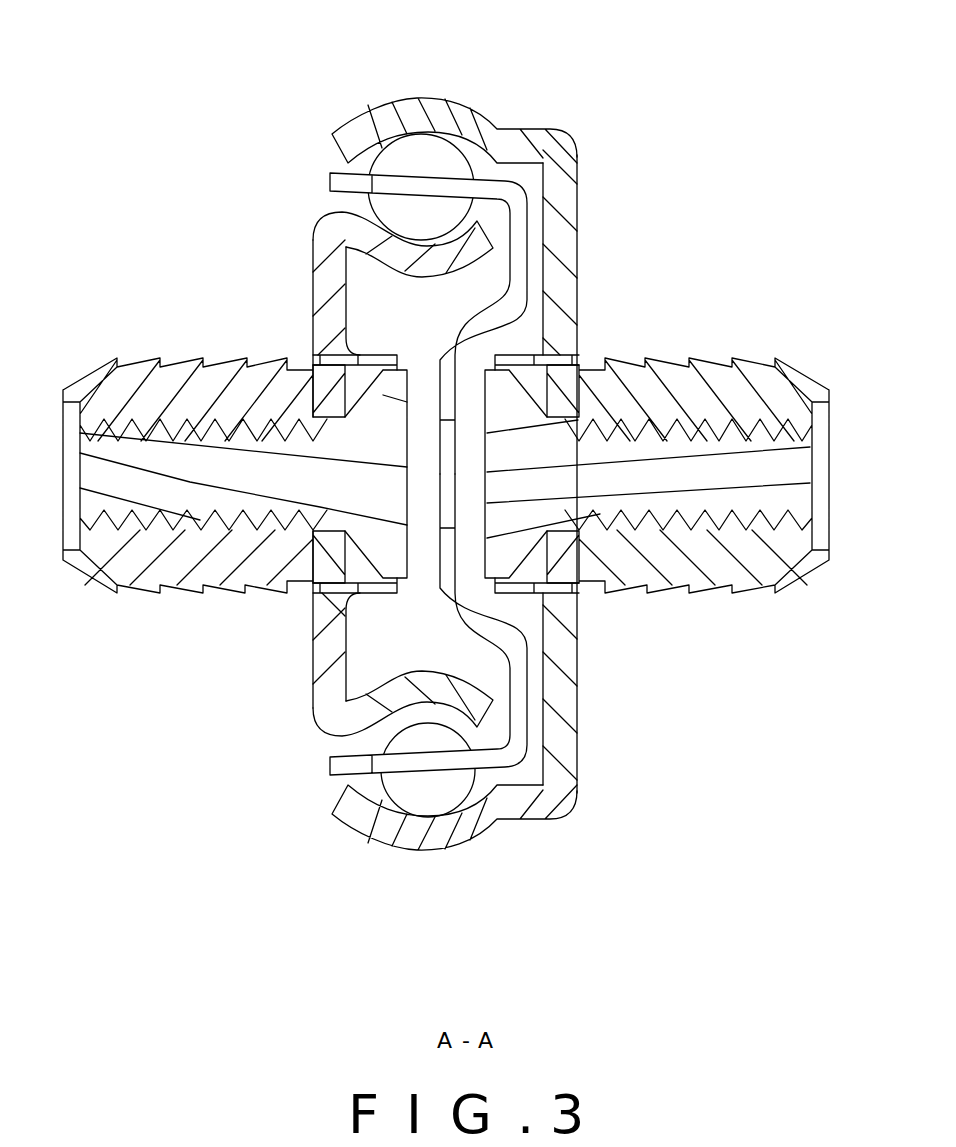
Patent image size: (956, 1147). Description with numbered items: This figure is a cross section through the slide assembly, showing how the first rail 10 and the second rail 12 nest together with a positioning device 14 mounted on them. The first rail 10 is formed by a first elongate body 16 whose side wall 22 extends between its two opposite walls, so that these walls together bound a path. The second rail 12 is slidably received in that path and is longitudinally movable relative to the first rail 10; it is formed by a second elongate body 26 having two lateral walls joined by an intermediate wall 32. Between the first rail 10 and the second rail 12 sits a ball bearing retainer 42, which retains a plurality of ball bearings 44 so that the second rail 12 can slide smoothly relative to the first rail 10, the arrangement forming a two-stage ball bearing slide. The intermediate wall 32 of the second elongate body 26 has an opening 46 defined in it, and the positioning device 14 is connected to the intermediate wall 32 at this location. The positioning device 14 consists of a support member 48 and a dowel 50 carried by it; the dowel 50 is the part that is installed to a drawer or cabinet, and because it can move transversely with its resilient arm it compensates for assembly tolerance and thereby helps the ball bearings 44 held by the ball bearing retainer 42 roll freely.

The first rail 10 is at (522, 430).
The second rail 12 is at (325, 519).
The positioning device 14 is at (446, 470).
The first elongate body 16 is at (577, 200).
The side wall 22 is at (565, 248).
The second elongate body 26 is at (313, 630).
The intermediate wall 32 is at (328, 657).
The ball bearing retainer 42 is at (485, 187).
The ball bearings 44 is at (417, 155).
The opening 46 is at (323, 341).
The support member 48 is at (265, 385).
The dowel 50 is at (157, 392).